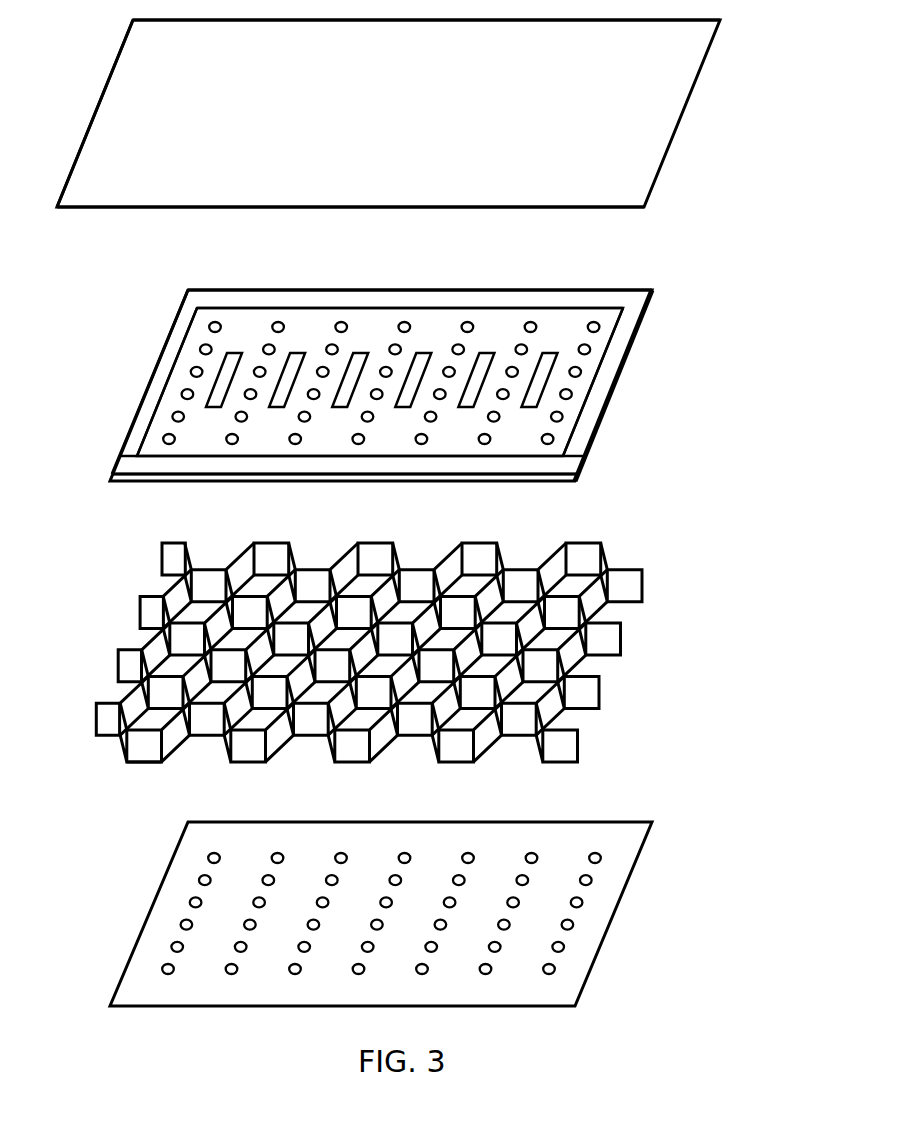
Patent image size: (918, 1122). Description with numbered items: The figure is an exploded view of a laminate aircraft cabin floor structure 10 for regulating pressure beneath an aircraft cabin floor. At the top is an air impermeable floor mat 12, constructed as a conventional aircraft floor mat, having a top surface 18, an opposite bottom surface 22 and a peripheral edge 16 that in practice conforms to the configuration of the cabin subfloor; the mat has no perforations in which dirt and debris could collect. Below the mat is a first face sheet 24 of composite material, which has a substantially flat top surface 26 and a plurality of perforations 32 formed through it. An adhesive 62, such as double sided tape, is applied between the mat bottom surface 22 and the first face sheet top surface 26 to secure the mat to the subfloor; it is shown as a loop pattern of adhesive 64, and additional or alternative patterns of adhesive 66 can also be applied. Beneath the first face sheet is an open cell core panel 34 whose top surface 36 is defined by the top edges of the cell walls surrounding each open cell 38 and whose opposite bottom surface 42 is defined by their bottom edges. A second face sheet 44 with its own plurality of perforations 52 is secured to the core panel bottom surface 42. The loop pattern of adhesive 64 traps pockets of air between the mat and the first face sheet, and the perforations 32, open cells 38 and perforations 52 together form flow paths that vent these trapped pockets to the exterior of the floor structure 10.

The laminate aircraft cabin floor structure 10 is at (708, 534).
The air impermeable floor mat 12 is at (667, 105).
The peripheral edge 16 is at (100, 97).
The top surface 18 is at (145, 60).
The bottom surface 22 is at (622, 207).
The first face sheet 24 is at (623, 373).
The top surface 26 is at (195, 358).
The perforations 32 is at (174, 411).
The open cell core panel 34 is at (128, 761).
The top surface 36 is at (360, 668).
The open cell 38 is at (268, 557).
The bottom surface 42 is at (145, 763).
The second face sheet 44 is at (617, 908).
The perforations 52 is at (173, 942).
The adhesive 62 is at (367, 352).
The loop pattern of adhesive 64 is at (318, 289).
The pattern of adhesive 66 is at (487, 353).